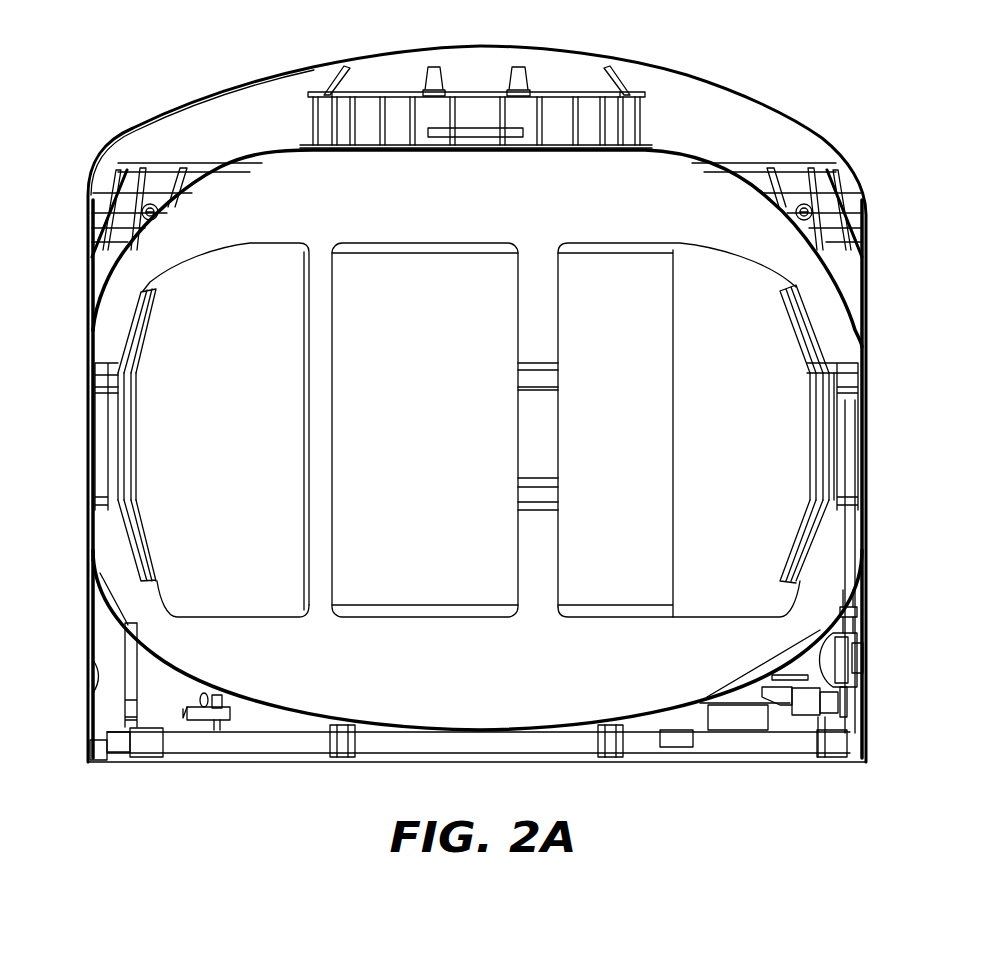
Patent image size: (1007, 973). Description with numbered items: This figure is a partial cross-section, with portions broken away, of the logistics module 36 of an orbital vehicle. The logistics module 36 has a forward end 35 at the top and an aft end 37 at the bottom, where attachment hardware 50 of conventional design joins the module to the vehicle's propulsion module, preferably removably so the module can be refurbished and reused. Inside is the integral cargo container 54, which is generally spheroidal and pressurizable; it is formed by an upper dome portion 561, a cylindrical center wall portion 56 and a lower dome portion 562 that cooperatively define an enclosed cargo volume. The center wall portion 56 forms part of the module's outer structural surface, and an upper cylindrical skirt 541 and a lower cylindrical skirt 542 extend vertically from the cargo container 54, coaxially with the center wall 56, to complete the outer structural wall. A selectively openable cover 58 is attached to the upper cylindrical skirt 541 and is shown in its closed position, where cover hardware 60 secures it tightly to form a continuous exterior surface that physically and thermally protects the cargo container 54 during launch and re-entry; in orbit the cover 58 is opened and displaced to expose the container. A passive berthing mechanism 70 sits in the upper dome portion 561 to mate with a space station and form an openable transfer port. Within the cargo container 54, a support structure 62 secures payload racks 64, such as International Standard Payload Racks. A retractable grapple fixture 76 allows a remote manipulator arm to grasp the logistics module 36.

The logistics module 36 is at (477, 409).
The berthing mechanism 70 is at (403, 108).
The cover 58 is at (198, 113).
The upper dome portion 561 is at (280, 200).
The forward end 35 is at (130, 137).
The cover hardware 60 is at (112, 193).
The cargo container 54 is at (449, 428).
The upper cylindrical skirt 541 is at (92, 268).
The cylindrical center wall portion 56 is at (92, 403).
The support structure 62 is at (102, 457).
The payload racks 64 is at (214, 453).
The lower cylindrical skirt 542 is at (92, 612).
The grapple fixture 76 is at (108, 677).
The aft end 37 is at (231, 764).
The attachment hardware 50 is at (390, 742).
The lower dome portion 562 is at (543, 703).